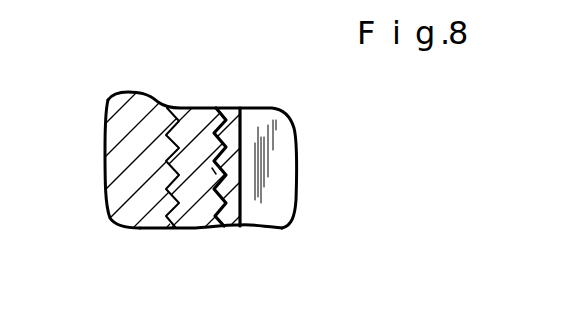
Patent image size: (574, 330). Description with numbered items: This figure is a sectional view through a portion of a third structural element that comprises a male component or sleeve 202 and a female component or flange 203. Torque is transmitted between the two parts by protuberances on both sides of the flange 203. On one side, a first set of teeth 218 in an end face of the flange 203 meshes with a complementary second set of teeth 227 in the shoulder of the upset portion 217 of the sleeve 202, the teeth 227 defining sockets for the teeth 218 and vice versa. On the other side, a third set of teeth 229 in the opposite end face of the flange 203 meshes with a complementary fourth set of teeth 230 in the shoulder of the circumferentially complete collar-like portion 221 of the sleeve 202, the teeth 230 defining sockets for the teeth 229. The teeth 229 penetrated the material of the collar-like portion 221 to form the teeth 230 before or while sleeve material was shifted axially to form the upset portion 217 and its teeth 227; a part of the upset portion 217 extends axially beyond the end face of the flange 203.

The sleeve 202 is at (120, 193).
The flange 203 is at (190, 204).
The upset portion 217 is at (230, 206).
The first set of teeth 218 is at (214, 170).
The collar-like portion 221 is at (143, 139).
The second set of teeth 227 is at (226, 130).
The third set of teeth 229 is at (174, 172).
The fourth set of teeth 230 is at (136, 228).